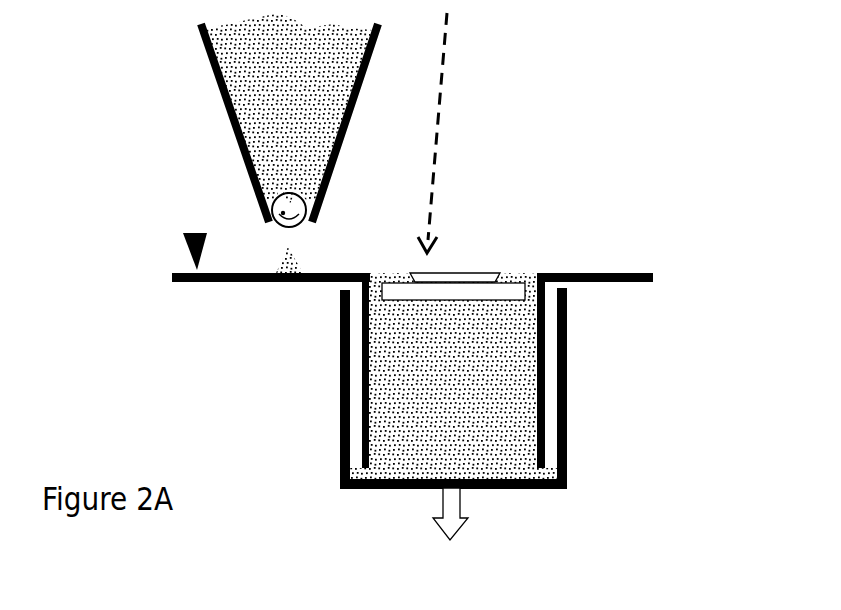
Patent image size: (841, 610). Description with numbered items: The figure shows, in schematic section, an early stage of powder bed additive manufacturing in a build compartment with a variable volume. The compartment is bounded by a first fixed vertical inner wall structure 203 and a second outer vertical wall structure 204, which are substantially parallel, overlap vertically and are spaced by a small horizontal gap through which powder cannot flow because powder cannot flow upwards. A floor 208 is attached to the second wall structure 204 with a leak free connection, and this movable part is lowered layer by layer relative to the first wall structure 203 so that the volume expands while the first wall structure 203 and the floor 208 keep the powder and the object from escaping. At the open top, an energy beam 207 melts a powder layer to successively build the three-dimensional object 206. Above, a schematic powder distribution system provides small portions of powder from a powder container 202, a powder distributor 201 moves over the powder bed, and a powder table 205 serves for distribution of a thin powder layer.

The powder distributor 201 is at (183, 242).
The powder container 202 is at (218, 83).
The first fixed vertical inner wall structure 203 is at (362, 420).
The second outer vertical wall structure 204 is at (342, 397).
The powder table 205 is at (620, 272).
The three-dimensional object 206 is at (482, 273).
The energy beam 207 is at (445, 53).
The floor 208 is at (365, 488).